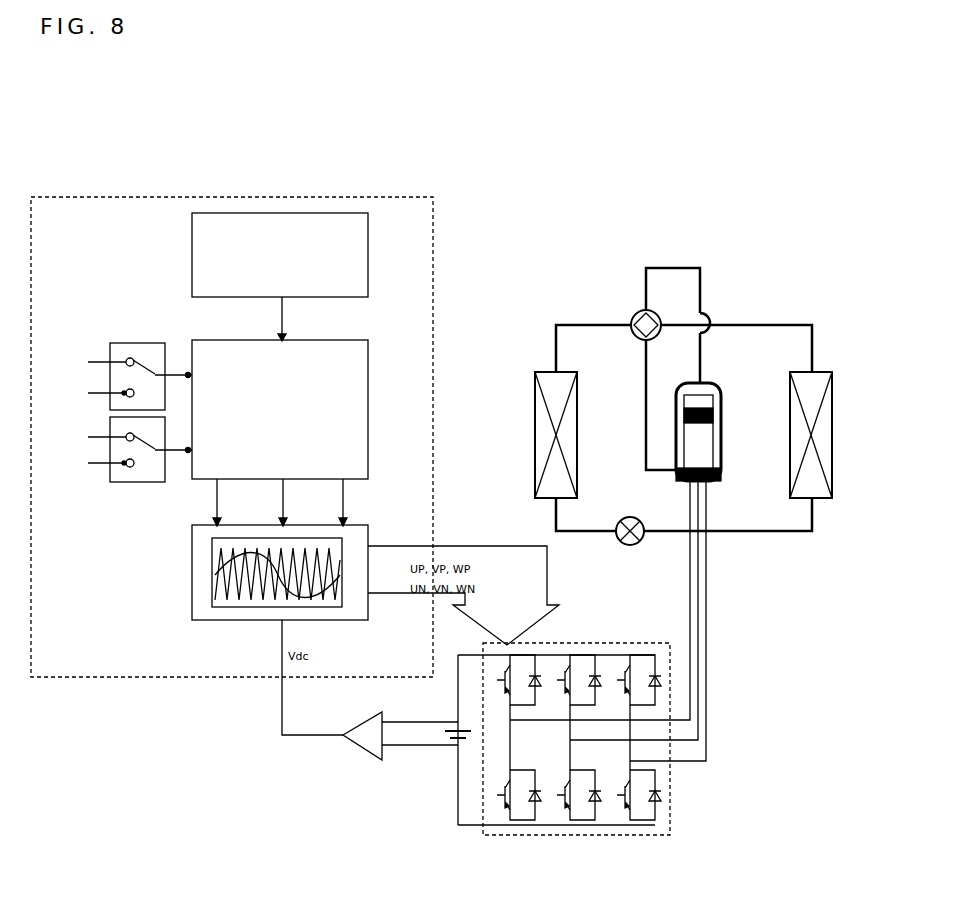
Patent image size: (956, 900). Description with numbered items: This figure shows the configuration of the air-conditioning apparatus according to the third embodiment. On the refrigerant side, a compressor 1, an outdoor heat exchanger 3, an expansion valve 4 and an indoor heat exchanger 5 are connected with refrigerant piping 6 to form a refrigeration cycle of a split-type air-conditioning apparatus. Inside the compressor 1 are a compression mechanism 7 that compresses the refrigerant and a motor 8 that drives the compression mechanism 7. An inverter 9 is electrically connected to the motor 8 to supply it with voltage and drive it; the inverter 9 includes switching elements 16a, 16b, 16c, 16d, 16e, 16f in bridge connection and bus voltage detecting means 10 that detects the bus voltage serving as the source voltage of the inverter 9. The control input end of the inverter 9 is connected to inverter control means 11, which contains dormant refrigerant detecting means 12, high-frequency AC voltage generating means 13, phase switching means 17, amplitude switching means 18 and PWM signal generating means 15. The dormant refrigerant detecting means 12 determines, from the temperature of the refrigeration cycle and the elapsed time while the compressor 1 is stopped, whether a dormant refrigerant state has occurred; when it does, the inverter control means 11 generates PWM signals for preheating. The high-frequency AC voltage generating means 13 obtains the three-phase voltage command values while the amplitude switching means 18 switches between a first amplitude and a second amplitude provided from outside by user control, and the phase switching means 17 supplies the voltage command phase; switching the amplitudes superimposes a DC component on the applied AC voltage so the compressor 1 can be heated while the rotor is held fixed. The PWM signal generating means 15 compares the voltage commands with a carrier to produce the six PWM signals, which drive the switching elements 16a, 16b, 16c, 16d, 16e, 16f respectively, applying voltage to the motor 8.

The compressor 1 is at (697, 394).
The outdoor heat exchanger 3 is at (532, 401).
The expansion valve 4 is at (611, 560).
The indoor heat exchanger 5 is at (833, 408).
The refrigerant piping 6 is at (708, 306).
The compression mechanism 7 is at (658, 422).
The motor 8 is at (719, 493).
The inverter 9 is at (595, 684).
The bus voltage detecting means 10 is at (385, 774).
The inverter control means 11 is at (232, 483).
The dormant refrigerant detecting means 12 is at (229, 255).
The high-frequency AC voltage generating means 13 is at (240, 388).
The PWM signal generating means 15 is at (231, 549).
The switching element 16a is at (505, 657).
The switching element 16b is at (578, 668).
The switching element 16c is at (640, 670).
The switching element 16d is at (512, 820).
The switching element 16e is at (565, 820).
The switching element 16f is at (625, 820).
The phase switching means 17 is at (116, 360).
The amplitude switching means 18 is at (124, 480).